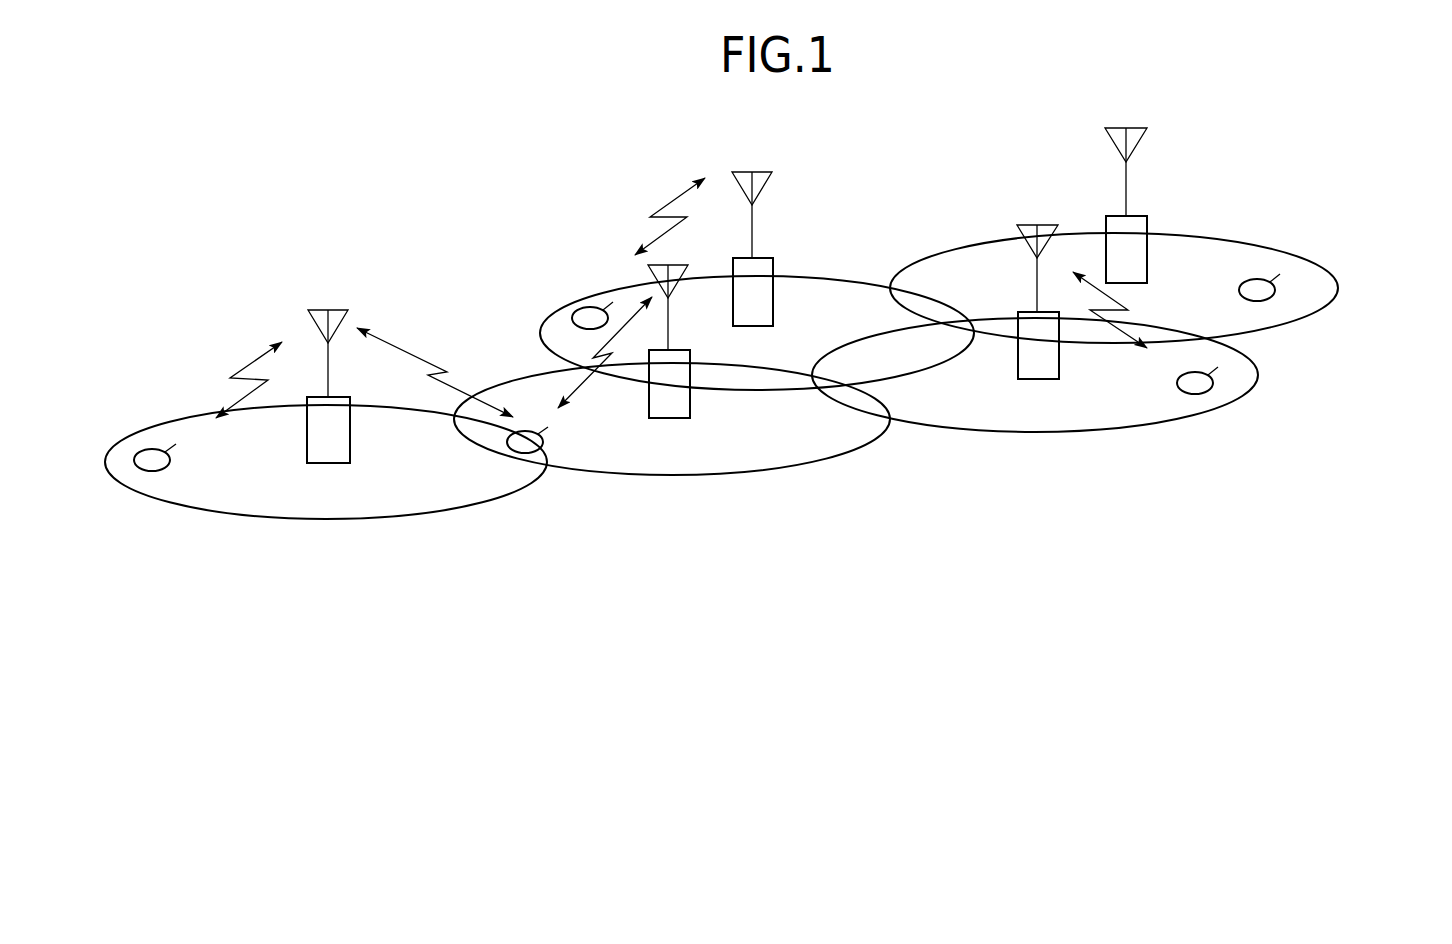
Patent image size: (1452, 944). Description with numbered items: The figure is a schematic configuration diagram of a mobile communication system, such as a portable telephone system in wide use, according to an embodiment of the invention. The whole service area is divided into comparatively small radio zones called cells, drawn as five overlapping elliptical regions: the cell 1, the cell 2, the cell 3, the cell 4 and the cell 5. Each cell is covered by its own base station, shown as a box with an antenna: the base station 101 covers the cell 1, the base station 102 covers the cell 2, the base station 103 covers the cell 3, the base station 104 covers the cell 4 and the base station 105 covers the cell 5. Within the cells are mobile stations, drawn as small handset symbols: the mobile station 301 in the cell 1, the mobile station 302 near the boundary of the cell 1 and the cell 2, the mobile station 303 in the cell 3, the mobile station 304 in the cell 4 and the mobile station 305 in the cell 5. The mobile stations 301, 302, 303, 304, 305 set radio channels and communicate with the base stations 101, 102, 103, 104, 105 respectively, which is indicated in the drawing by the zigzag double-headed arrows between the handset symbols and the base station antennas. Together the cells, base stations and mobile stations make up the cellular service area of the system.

The cell 1 is at (133, 432).
The cell 2 is at (810, 468).
The cell 3 is at (540, 327).
The cell 4 is at (1247, 388).
The cell 5 is at (965, 243).
The base station 101 is at (327, 463).
The base station 102 is at (665, 418).
The base station 103 is at (773, 260).
The base station 104 is at (1033, 382).
The base station 105 is at (1148, 217).
The mobile station 301 is at (147, 471).
The mobile station 302 is at (545, 450).
The mobile station 303 is at (596, 305).
The mobile station 304 is at (1192, 395).
The mobile station 305 is at (1275, 297).